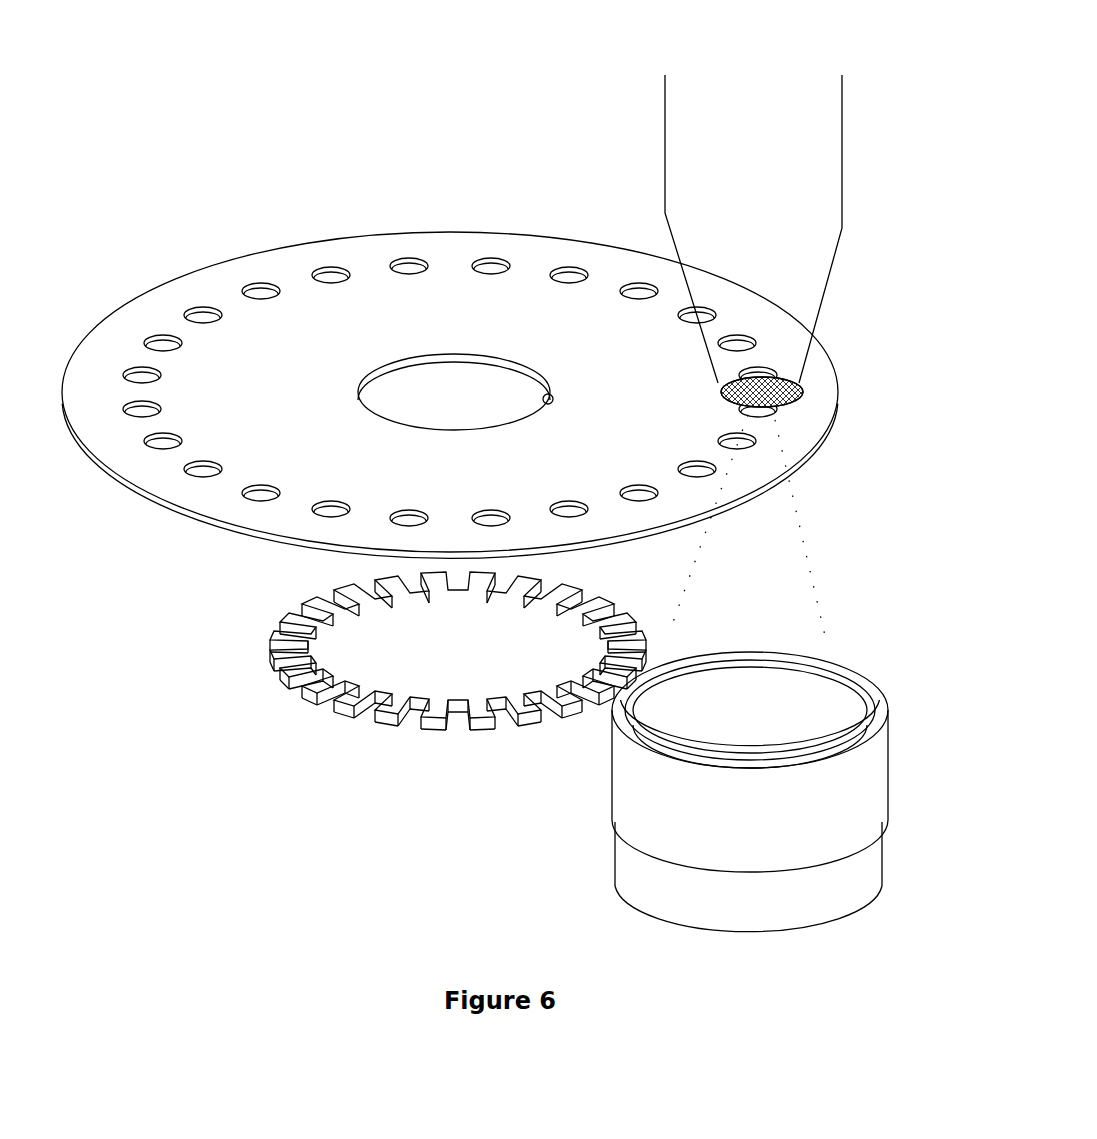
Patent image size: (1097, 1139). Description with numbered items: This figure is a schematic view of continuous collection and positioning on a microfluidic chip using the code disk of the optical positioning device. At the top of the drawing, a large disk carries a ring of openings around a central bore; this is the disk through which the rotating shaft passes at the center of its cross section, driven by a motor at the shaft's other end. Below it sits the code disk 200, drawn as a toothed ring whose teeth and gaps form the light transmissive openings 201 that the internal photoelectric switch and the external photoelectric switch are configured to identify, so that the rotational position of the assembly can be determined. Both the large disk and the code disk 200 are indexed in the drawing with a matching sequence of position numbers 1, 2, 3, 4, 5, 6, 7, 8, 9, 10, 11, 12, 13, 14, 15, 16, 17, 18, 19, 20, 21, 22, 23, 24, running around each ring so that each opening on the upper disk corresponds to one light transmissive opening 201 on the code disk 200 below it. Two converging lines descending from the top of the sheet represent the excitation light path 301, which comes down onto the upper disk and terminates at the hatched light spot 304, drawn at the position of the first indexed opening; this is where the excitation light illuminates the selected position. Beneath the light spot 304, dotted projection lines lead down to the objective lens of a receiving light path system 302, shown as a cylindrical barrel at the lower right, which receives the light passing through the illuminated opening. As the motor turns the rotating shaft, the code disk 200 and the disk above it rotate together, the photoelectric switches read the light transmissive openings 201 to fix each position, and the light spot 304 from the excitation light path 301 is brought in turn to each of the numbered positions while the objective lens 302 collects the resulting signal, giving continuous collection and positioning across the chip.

The excitation light path 301 is at (758, 112).
The light spot 304 is at (803, 391).
The objective lens of a receiving light path system 302 is at (640, 777).
The code disk 200 is at (277, 630).
The light transmissive opening 201 is at (377, 700).
The filter hole 1 is at (743, 412).
The filter hole 2 is at (737, 377).
The filter hole 3 is at (724, 349).
The filter hole 4 is at (693, 325).
The filter hole 5 is at (639, 305).
The filter hole 6 is at (569, 287).
The filter hole 7 is at (491, 278).
The filter hole 8 is at (409, 278).
The filter hole 9 is at (331, 285).
The filter hole 10 is at (261, 303).
The filter hole 11 is at (212, 325).
The filter hole 12 is at (175, 350).
The filter hole 13 is at (155, 377).
The filter hole 14 is at (155, 407).
The filter hole 15 is at (176, 436).
The filter hole 16 is at (212, 459).
The filter hole 17 is at (263, 482).
The filter hole 18 is at (331, 498).
The filter hole 19 is at (409, 507).
The filter hole 20 is at (491, 507).
The filter hole 21 is at (569, 498).
The filter hole 22 is at (639, 482).
The filter hole 23 is at (693, 458).
The filter hole 24 is at (725, 435).